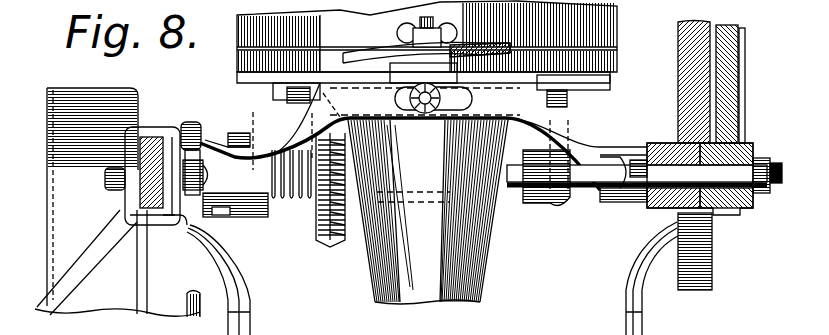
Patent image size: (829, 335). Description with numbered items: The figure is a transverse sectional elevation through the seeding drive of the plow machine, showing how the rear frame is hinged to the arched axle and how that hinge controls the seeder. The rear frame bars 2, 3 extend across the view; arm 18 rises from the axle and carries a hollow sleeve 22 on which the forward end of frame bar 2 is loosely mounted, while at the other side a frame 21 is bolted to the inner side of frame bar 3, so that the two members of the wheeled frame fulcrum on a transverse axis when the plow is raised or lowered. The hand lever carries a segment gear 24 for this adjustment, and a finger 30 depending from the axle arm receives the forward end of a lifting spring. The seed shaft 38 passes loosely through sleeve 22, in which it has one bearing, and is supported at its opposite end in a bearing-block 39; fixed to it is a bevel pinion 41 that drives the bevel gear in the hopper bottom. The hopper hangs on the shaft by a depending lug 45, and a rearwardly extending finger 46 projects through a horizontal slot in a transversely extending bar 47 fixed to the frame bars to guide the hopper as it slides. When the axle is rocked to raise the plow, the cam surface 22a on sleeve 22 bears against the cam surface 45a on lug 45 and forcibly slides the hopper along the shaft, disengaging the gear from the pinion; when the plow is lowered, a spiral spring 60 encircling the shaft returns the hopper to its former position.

The frame bar 2 is at (150, 140).
The frame bar 3 is at (753, 147).
The arm 18 is at (190, 122).
The frame 21 is at (745, 95).
The hollow sleeve 22 is at (206, 140).
The cam surface 22a is at (190, 232).
The segment gear 24 is at (678, 97).
The finger 30 is at (252, 316).
The seed shaft 38 is at (513, 197).
The bearing-block 39 is at (628, 205).
The bevel pinion 41 is at (328, 247).
The depending lug 45 is at (258, 218).
The cam surface 45a is at (224, 160).
The finger 46 is at (415, 70).
The transversely extending bar 47 is at (590, 180).
The spiral spring 60 is at (295, 200).